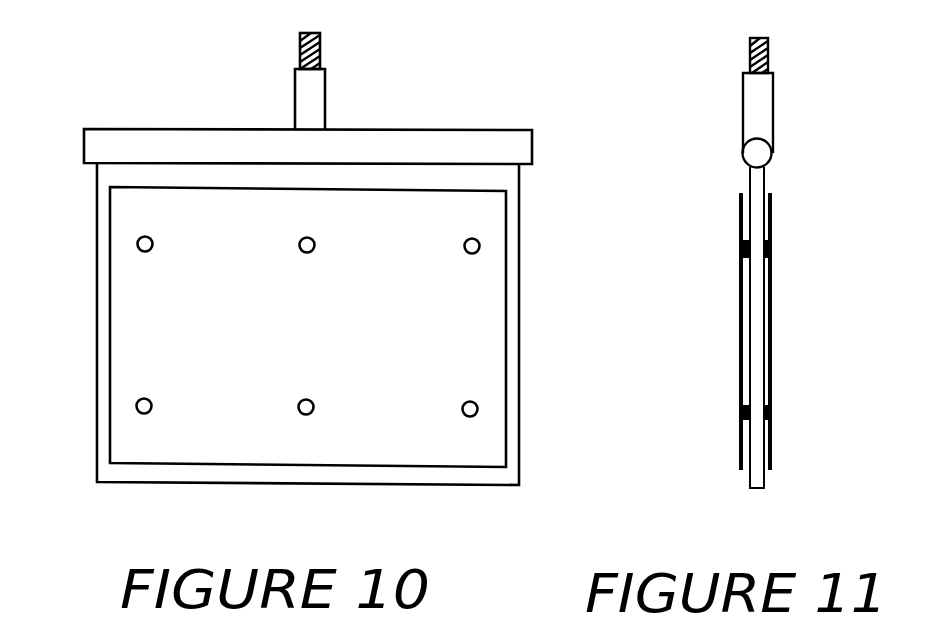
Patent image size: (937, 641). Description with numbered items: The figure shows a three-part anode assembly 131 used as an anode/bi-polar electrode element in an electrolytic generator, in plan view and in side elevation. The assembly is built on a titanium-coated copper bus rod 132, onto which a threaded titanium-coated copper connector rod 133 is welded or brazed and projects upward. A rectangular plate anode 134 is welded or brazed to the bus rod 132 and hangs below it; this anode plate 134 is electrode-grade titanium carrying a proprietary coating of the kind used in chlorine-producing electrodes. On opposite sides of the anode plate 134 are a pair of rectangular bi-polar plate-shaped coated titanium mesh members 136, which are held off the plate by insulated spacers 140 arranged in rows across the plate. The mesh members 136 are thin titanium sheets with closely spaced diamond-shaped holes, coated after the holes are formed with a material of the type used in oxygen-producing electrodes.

In FIG. 10, the three-part anode assembly 131 is at (73, 349).
In FIG. 10, the titanium-coated copper bus rod 132 is at (360, 145).
In FIG. 11, the titanium-coated copper bus rod 132 is at (760, 155).
In FIG. 10, the threaded titanium-coated copper connector rod 133 is at (295, 84).
In FIG. 11, the threaded titanium-coated copper connector rod 133 is at (764, 93).
In FIG. 10, the rectangular plate anode 134 is at (520, 242).
In FIG. 11, the rectangular plate anode 134 is at (748, 488).
In FIG. 10, the coated titanium mesh members 136 is at (435, 330).
In FIG. 11, the coated titanium mesh members 136 is at (773, 208).
In FIG. 10, the insulated spacers 140 is at (478, 412).
In FIG. 11, the insulated spacers 140 is at (805, 250).